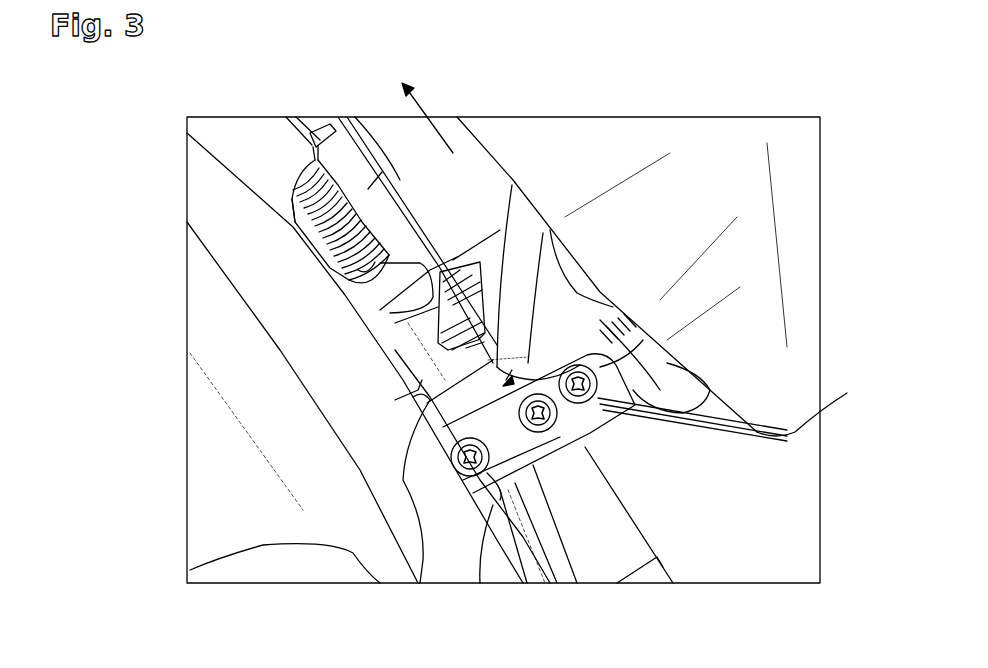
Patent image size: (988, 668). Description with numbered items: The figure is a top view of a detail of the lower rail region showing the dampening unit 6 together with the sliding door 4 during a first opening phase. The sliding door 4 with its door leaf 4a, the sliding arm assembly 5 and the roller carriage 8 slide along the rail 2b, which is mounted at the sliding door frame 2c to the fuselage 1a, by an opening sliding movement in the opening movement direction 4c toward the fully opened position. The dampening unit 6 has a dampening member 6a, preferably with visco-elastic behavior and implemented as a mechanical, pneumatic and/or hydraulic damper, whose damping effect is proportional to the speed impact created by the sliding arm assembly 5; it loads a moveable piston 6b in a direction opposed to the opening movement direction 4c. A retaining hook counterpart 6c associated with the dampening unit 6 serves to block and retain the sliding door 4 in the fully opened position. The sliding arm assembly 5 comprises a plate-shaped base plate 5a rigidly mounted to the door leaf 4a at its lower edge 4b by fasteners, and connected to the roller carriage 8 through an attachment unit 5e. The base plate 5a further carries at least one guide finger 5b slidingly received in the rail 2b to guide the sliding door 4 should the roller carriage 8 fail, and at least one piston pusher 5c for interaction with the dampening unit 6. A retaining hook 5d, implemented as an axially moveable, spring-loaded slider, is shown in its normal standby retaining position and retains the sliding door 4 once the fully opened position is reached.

The fuselage 1a is at (527, 557).
The rail 2b is at (650, 525).
The sliding door frame 2c is at (232, 148).
The sliding door 4 is at (753, 117).
The door leaf 4a is at (575, 150).
The lower edge 4b is at (790, 438).
The opening movement direction 4c is at (437, 145).
The sliding arm assembly 5 is at (677, 443).
The base plate 5a is at (633, 412).
The guide finger 5b is at (413, 397).
The piston pusher 5c is at (428, 560).
The retaining hook 5d is at (440, 333).
The attachment unit 5e is at (497, 367).
The dampening unit 6 is at (380, 232).
The dampening member 6a is at (293, 232).
The moveable piston 6b is at (397, 292).
The retaining hook counterpart 6c is at (440, 320).
The roller carriage 8 is at (480, 583).